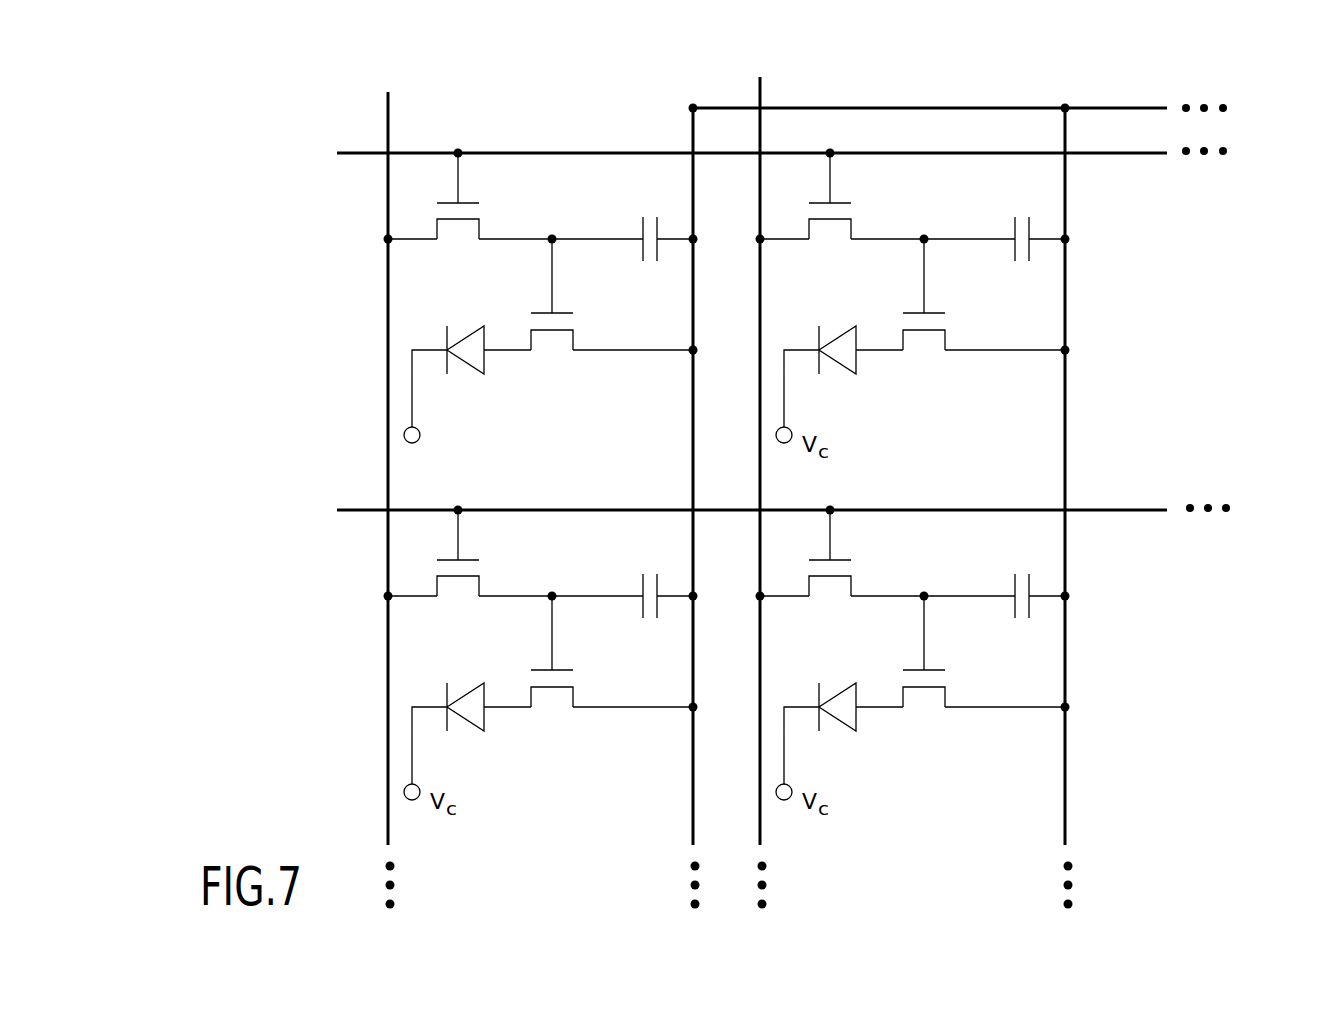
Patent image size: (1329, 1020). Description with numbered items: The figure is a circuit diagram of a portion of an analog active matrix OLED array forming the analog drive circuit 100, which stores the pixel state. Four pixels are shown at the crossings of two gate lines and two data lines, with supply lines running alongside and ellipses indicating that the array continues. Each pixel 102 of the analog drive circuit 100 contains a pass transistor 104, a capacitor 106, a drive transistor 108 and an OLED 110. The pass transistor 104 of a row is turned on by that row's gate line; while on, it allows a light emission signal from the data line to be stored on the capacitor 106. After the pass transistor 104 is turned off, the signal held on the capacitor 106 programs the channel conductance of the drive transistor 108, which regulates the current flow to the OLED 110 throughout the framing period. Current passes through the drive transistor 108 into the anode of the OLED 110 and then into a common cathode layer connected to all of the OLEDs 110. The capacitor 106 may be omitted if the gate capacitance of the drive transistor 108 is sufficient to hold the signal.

The analog drive circuit 100 is at (938, 87).
The pixel 102 is at (522, 190).
The pass transistor 104 is at (457, 241).
The capacitor 106 is at (651, 222).
The drive transistor 108 is at (548, 348).
The OLED 110 is at (437, 338).